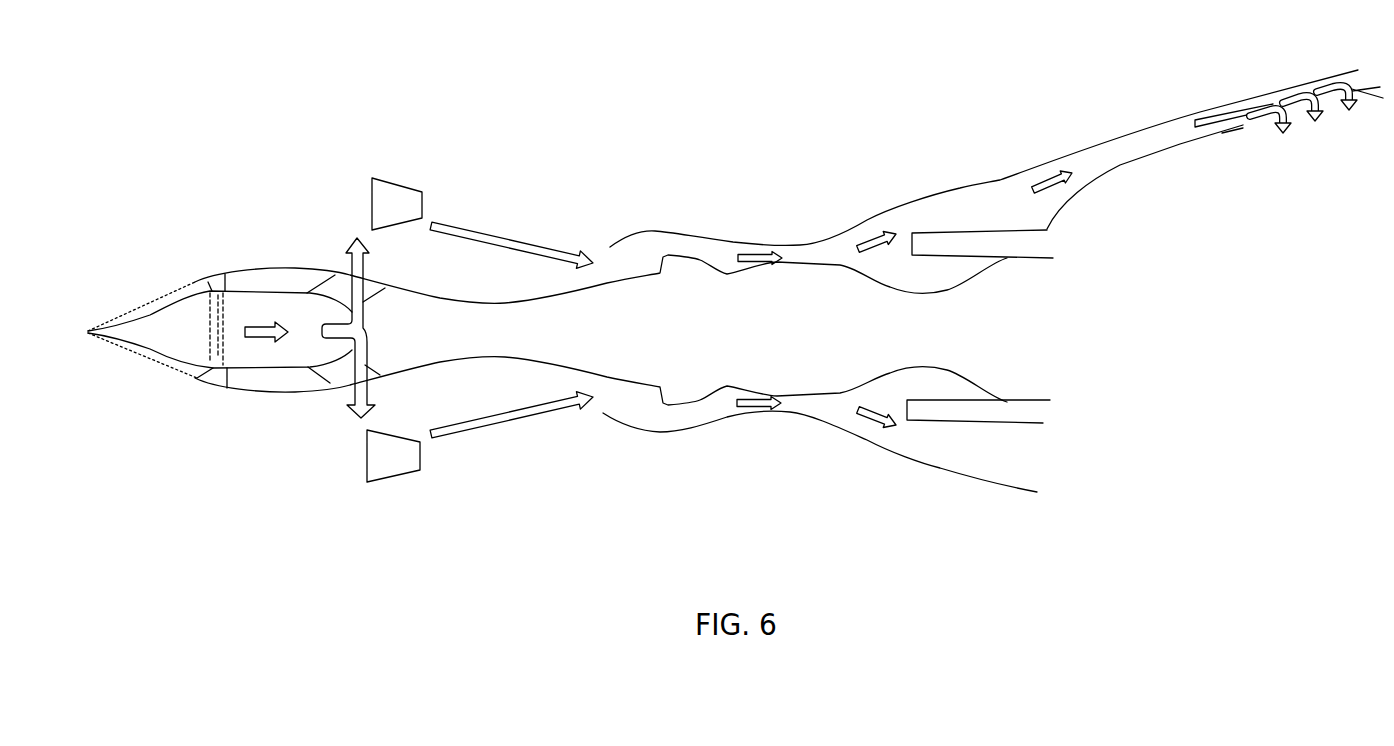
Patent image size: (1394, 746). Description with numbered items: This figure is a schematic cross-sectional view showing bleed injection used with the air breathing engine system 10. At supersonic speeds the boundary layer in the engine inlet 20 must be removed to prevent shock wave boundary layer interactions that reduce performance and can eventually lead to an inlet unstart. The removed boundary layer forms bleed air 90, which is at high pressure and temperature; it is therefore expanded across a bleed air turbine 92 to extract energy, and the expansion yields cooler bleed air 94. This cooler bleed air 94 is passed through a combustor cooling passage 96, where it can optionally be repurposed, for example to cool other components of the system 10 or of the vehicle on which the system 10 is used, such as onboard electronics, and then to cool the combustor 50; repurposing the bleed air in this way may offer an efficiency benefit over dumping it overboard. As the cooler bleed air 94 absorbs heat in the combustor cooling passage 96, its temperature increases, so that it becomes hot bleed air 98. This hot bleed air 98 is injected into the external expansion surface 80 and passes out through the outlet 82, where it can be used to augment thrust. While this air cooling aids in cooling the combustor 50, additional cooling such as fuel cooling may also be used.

The air breathing engine system 10 is at (244, 137).
The engine inlet 20 is at (190, 284).
The combustor 50 is at (782, 347).
The external expansion surface 80 is at (1102, 320).
The outlet 82 is at (1301, 274).
The bleed air 90 is at (350, 258).
The bleed air turbine 92 is at (396, 200).
The cooler bleed air 94 is at (507, 233).
The combustor cooling passage 96 is at (698, 240).
The hot bleed air 98 is at (868, 243).